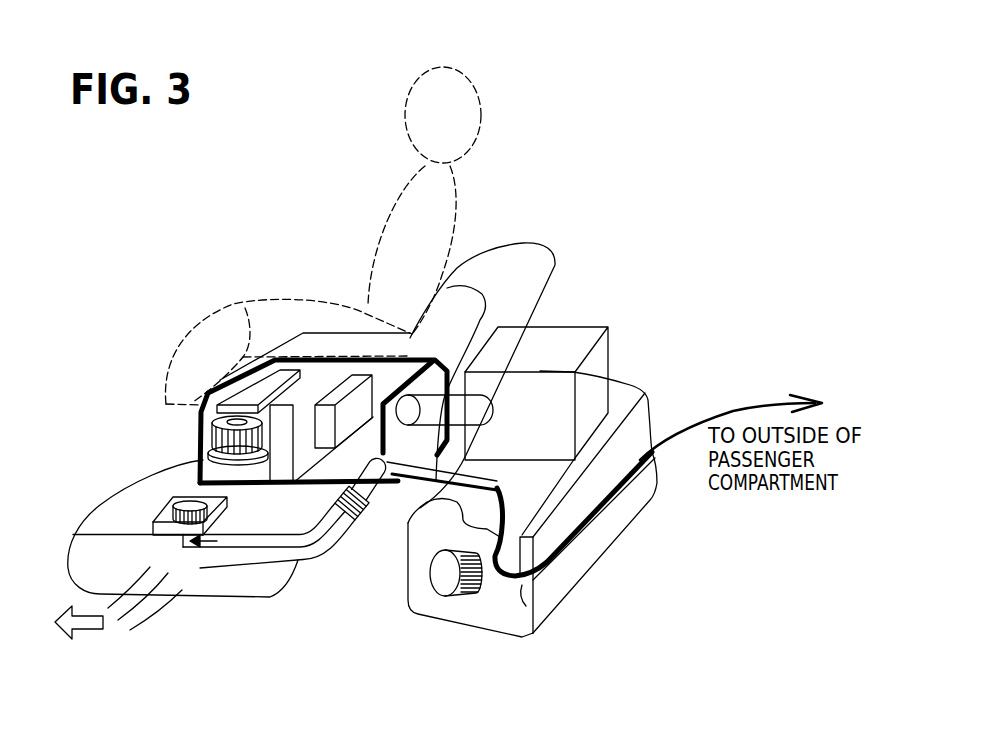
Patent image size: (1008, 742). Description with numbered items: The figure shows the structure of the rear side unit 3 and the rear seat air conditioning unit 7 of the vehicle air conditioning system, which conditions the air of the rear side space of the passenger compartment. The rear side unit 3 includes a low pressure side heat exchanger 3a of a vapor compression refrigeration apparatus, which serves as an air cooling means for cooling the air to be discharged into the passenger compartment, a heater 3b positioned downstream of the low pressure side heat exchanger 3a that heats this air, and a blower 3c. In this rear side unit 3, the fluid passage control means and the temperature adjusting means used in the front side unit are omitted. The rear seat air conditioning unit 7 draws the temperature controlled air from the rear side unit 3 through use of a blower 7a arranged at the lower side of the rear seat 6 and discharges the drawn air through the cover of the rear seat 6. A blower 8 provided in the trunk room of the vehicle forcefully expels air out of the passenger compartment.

The rear side unit 3 is at (436, 354).
The low pressure side heat exchanger 3a is at (318, 372).
The heater 3b is at (366, 371).
The blower 3c is at (248, 465).
The rear seat 6 is at (117, 512).
The rear seat air conditioning unit 7 is at (177, 500).
The blower 7a is at (186, 522).
The blower 8 is at (467, 598).